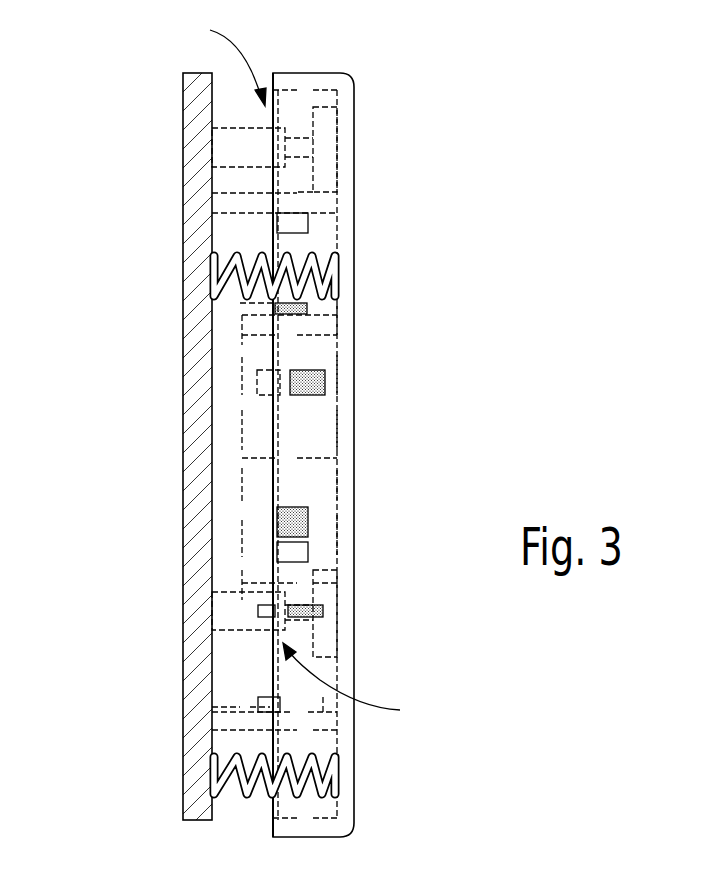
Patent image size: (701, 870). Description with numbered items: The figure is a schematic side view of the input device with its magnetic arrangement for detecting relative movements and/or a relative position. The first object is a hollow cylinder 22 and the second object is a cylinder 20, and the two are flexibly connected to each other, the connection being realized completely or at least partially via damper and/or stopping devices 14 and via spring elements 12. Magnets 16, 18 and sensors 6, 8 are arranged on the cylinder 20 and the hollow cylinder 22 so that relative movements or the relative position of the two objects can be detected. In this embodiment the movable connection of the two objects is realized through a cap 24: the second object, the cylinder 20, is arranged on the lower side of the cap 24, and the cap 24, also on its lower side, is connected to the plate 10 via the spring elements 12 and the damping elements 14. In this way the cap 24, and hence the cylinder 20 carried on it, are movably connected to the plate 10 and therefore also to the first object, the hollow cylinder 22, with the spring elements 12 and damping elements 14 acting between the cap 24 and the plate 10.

The sensor 6 is at (343, 225).
The sensor 8 is at (258, 712).
The plate 10 is at (197, 707).
The spring element 12 is at (250, 270).
The damping element 14 is at (305, 366).
The magnet 16 is at (222, 306).
The magnet 18 is at (278, 388).
The cylinder 20 is at (258, 498).
The hollow cylinder 22 is at (240, 663).
The cap 24 is at (343, 132).